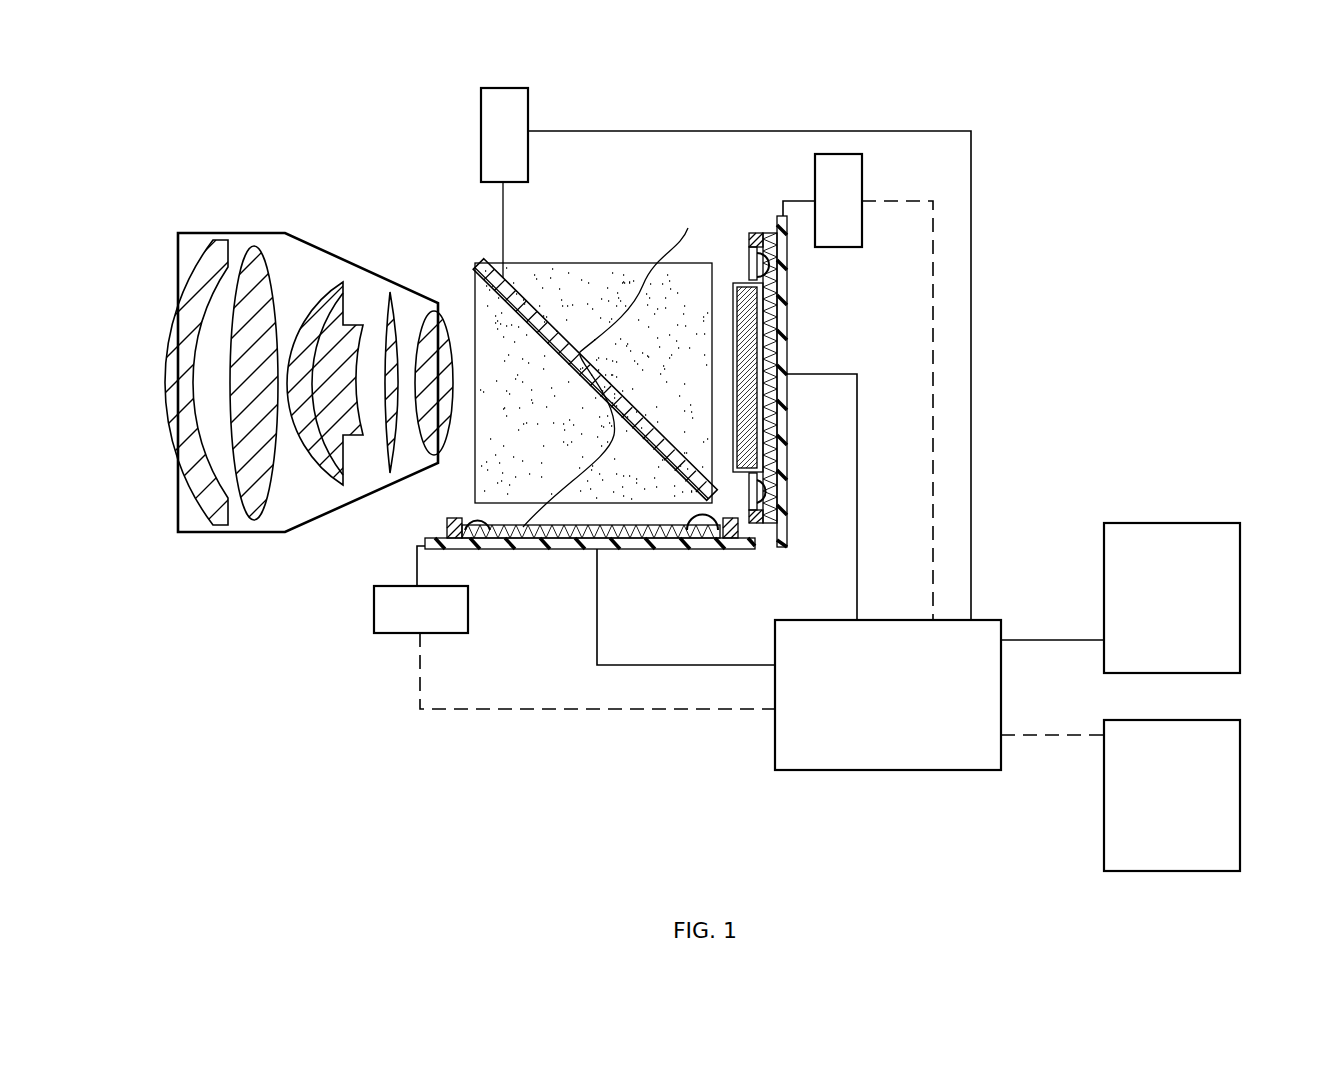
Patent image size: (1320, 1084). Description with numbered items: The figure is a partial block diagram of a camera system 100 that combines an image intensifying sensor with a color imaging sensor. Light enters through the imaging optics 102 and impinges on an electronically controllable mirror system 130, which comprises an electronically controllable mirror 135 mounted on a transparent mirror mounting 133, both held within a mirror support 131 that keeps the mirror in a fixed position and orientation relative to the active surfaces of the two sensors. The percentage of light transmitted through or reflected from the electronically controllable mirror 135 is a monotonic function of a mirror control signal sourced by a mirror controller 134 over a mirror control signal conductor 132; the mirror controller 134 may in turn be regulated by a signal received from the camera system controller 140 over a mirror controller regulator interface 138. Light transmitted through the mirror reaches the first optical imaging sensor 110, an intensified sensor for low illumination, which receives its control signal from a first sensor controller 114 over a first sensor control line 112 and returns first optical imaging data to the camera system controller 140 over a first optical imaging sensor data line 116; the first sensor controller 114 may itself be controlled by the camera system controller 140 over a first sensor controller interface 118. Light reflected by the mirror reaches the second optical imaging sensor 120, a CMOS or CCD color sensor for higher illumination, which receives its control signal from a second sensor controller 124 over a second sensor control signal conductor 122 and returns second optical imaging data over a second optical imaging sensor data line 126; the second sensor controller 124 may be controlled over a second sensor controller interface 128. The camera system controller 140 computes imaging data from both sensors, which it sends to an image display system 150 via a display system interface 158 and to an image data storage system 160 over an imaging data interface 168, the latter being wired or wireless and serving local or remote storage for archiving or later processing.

The camera system 100 is at (1025, 135).
The imaging optics 102 is at (226, 236).
The first optical imaging sensor 110 is at (780, 455).
The first sensor control line 112 is at (783, 210).
The first sensor controller 114 is at (821, 213).
The first optical imaging sensor data line 116 is at (835, 374).
The first sensor controller interface 118 is at (933, 487).
The second optical imaging sensor 120 is at (450, 527).
The second sensor control signal conductor 122 is at (417, 555).
The second sensor controller 124 is at (404, 621).
The second optical imaging sensor data line 126 is at (597, 640).
The second sensor controller interface 128 is at (420, 688).
The electronically controllable mirror system 130 is at (595, 350).
The mirror support 131 is at (628, 263).
The mirror control signal conductor 132 is at (503, 237).
The transparent mirror mounting 133 is at (548, 250).
The mirror controller 134 is at (488, 148).
The electronically controllable mirror 135 is at (523, 530).
The mirror controller regulator interface 138 is at (703, 130).
The camera system controller 140 is at (871, 703).
The image display system 150 is at (1155, 613).
The display system interface 158 is at (1035, 640).
The image data storage system 160 is at (1155, 808).
The imaging data interface 168 is at (1072, 738).